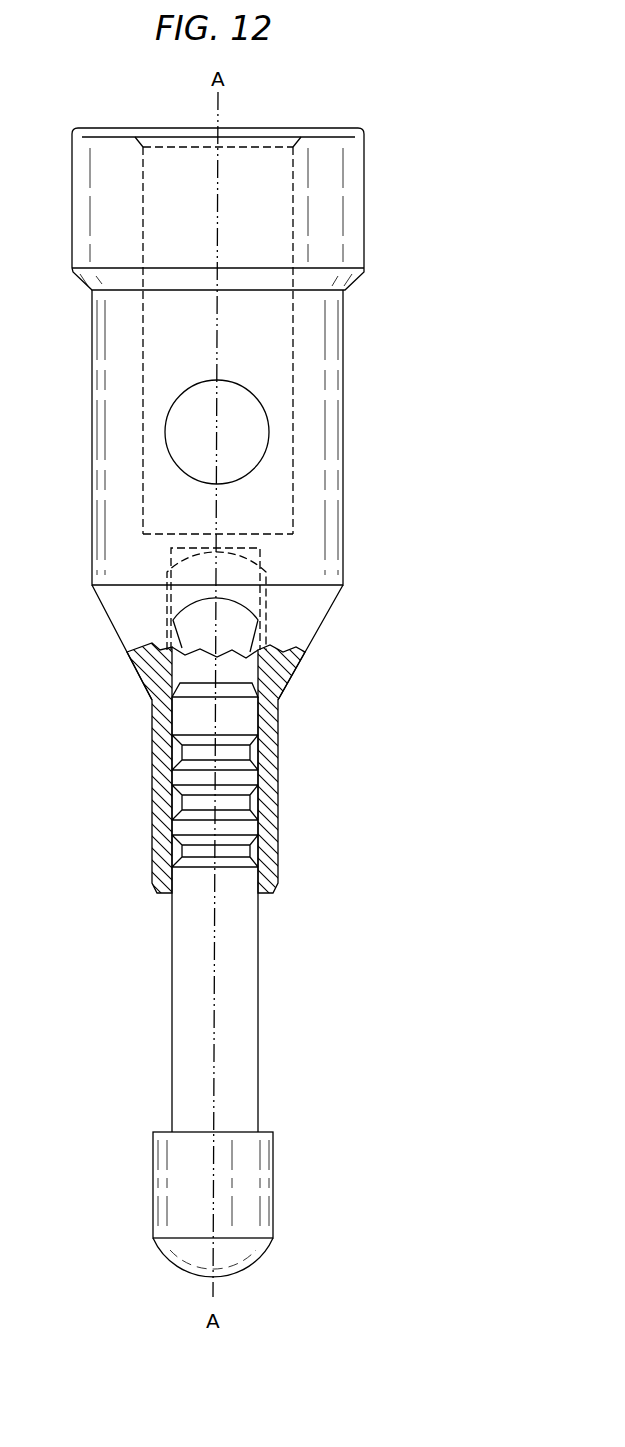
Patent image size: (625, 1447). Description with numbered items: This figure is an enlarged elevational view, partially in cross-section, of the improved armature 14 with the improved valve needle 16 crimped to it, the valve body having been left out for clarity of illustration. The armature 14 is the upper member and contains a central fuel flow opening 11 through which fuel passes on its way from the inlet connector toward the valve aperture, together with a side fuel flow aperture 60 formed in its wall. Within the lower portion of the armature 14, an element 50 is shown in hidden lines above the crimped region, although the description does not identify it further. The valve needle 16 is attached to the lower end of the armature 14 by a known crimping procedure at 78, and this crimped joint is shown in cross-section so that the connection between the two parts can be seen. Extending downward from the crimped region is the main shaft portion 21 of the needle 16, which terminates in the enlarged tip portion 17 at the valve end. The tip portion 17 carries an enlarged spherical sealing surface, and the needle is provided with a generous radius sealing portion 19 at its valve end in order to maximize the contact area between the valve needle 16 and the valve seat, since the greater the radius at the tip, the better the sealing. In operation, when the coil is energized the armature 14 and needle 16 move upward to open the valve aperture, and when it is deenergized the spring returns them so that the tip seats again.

The central fuel flow opening 11 is at (270, 220).
The armature 14 is at (333, 411).
The side fuel flow aperture 60 is at (192, 398).
The plug 50 is at (187, 593).
The crimping location 78 is at (253, 760).
The valve needle 16 is at (248, 939).
The main shaft portion 21 is at (248, 1017).
The enlarged tip portion 17 is at (163, 1185).
The generous radius sealing portion 19 is at (257, 1260).